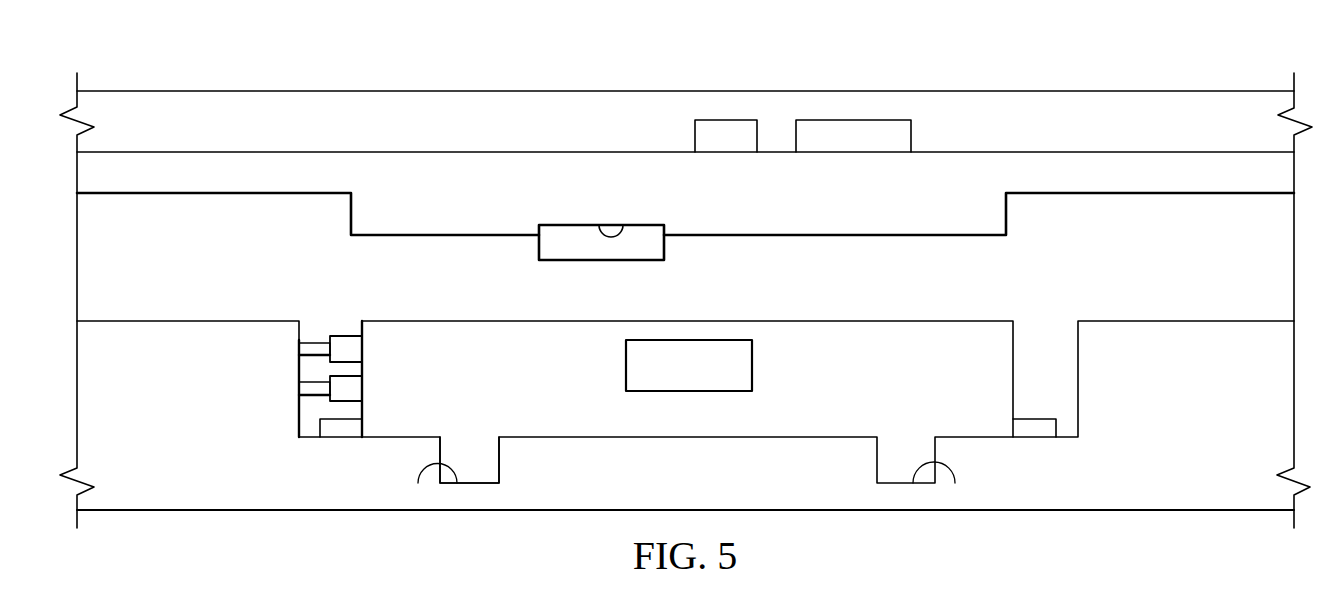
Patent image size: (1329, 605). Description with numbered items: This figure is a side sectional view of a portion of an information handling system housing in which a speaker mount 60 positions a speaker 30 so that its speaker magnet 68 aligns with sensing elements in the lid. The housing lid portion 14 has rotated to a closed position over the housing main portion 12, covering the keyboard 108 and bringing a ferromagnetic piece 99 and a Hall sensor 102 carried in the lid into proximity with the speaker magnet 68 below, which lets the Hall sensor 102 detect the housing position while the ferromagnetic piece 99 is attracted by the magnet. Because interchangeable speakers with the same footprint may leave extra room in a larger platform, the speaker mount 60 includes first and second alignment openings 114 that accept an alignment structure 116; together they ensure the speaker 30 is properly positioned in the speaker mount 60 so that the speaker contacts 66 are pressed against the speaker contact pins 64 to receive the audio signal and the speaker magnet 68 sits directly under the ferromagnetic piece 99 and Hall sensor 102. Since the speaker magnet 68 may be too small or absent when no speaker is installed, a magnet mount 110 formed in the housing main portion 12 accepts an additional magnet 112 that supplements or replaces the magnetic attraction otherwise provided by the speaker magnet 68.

The housing main portion 12 is at (1145, 502).
The housing lid portion 14 is at (415, 103).
The speaker 30 is at (898, 330).
The speaker mount 60 is at (340, 428).
The speaker contact pins 64 is at (315, 348).
The speaker contacts 66 is at (347, 343).
The speaker magnet 68 is at (633, 365).
The ferromagnetic piece 99 is at (852, 127).
The Hall sensor 102 is at (727, 128).
The keyboard 108 is at (187, 182).
The magnet mount 110 is at (622, 230).
The additional magnet 112 is at (653, 247).
The alignment openings 114 is at (418, 483).
The alignment structure 116 is at (489, 463).